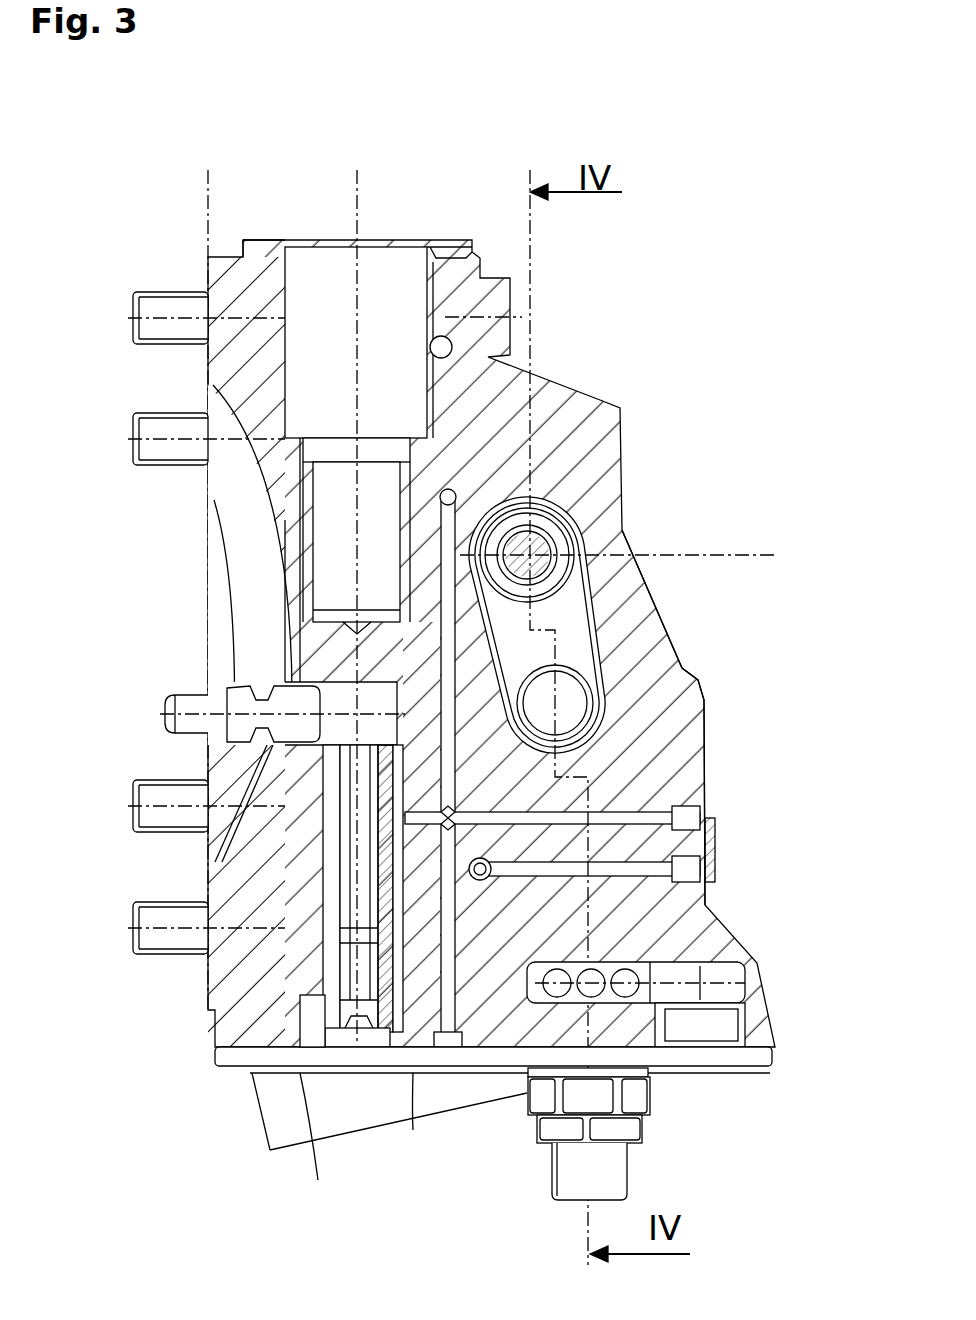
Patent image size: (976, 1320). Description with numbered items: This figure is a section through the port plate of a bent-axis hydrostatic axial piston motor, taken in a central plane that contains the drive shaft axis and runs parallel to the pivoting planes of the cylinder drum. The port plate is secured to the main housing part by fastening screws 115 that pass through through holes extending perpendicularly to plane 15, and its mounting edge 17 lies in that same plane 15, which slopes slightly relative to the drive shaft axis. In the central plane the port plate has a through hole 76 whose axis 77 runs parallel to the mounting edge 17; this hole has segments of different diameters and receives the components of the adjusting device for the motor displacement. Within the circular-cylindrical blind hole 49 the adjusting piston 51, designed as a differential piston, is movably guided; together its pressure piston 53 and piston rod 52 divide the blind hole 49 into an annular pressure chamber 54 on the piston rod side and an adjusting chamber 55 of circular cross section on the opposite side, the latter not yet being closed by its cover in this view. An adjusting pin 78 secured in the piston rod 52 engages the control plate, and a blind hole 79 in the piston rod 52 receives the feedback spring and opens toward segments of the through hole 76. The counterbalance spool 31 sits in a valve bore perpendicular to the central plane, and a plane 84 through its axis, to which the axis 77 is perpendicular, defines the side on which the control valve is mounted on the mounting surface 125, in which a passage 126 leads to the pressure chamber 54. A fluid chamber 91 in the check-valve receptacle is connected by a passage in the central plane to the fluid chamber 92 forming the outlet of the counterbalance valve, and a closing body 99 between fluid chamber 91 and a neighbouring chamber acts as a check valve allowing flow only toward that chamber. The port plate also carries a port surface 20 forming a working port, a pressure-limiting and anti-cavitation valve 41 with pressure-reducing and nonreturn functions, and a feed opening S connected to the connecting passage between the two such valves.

The plane 15 is at (205, 185).
The mounting edge 17 is at (207, 266).
The fastening screws 115 is at (142, 327).
The mounting surface 125 is at (266, 245).
The through hole 76 is at (300, 282).
The axis 77 is at (357, 180).
The passage 126 is at (443, 245).
The blind hole 79 is at (330, 540).
The adjusting pin 78 is at (230, 667).
The piston rod 52 is at (330, 790).
The pressure chamber 54 is at (335, 842).
The blind hole 49 is at (320, 965).
The adjusting piston 51 is at (300, 1003).
The fluid chamber 92 is at (535, 458).
The counterbalance spool 31 is at (538, 538).
The plane 84 is at (766, 558).
The closing body 99 is at (578, 667).
The fluid chamber 91 is at (605, 718).
The feed opening S is at (735, 985).
The pressure-limiting and anti-cavitation valve 41 is at (635, 1107).
The pressure piston 53 is at (295, 1143).
The port surface 20 is at (372, 1130).
The adjusting chamber 55 is at (413, 1130).